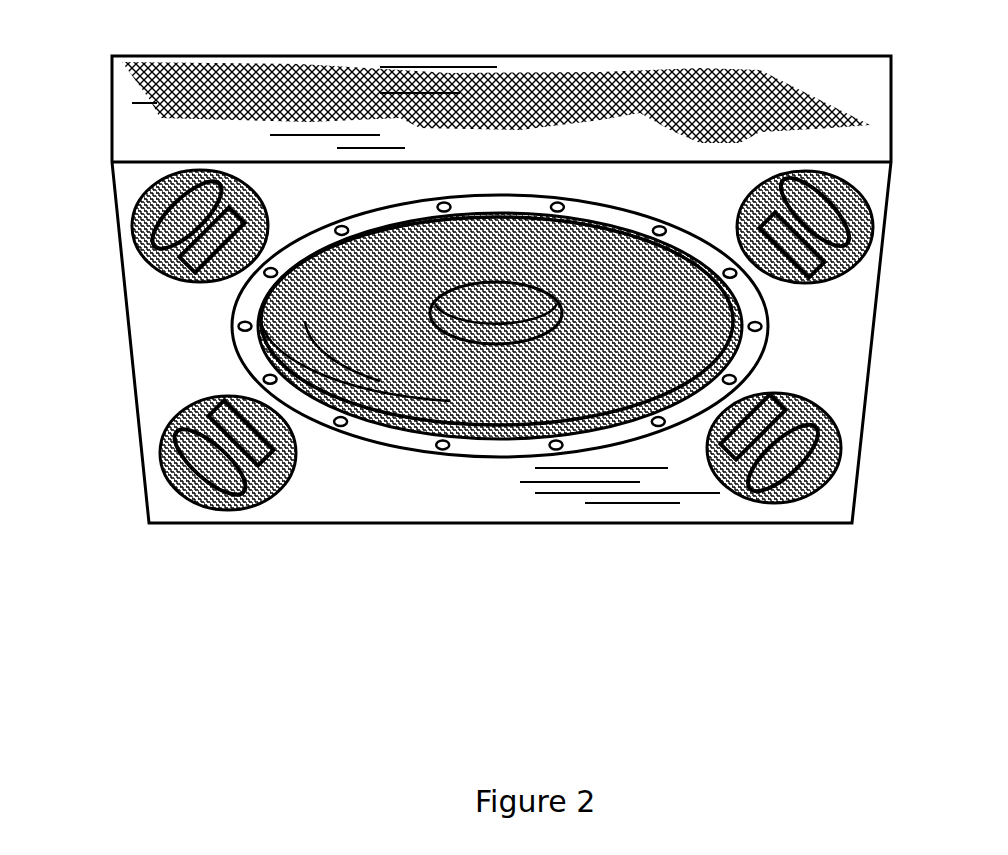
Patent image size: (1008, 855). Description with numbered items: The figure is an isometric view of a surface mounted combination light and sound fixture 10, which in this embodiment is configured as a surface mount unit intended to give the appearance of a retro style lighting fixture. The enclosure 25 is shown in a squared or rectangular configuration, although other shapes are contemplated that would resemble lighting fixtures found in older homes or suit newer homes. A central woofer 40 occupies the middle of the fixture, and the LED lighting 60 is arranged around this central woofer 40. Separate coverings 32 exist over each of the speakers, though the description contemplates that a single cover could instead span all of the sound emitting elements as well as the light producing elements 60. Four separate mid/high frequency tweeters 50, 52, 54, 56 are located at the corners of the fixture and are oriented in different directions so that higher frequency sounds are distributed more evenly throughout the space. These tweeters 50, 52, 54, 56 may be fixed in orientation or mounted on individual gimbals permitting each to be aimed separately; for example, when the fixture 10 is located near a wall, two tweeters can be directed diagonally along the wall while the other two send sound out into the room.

The surface mounted combination light and sound fixture 10 is at (469, 309).
The enclosure 25 is at (452, 55).
The covering 32 is at (572, 428).
The central woofer 40 is at (457, 290).
The mid/high frequency tweeter 50 is at (215, 500).
The mid/high frequency tweeter 52 is at (778, 493).
The mid/high frequency tweeter 54 is at (163, 245).
The mid/high frequency tweeter 56 is at (790, 215).
The LED lighting 60 is at (556, 450).